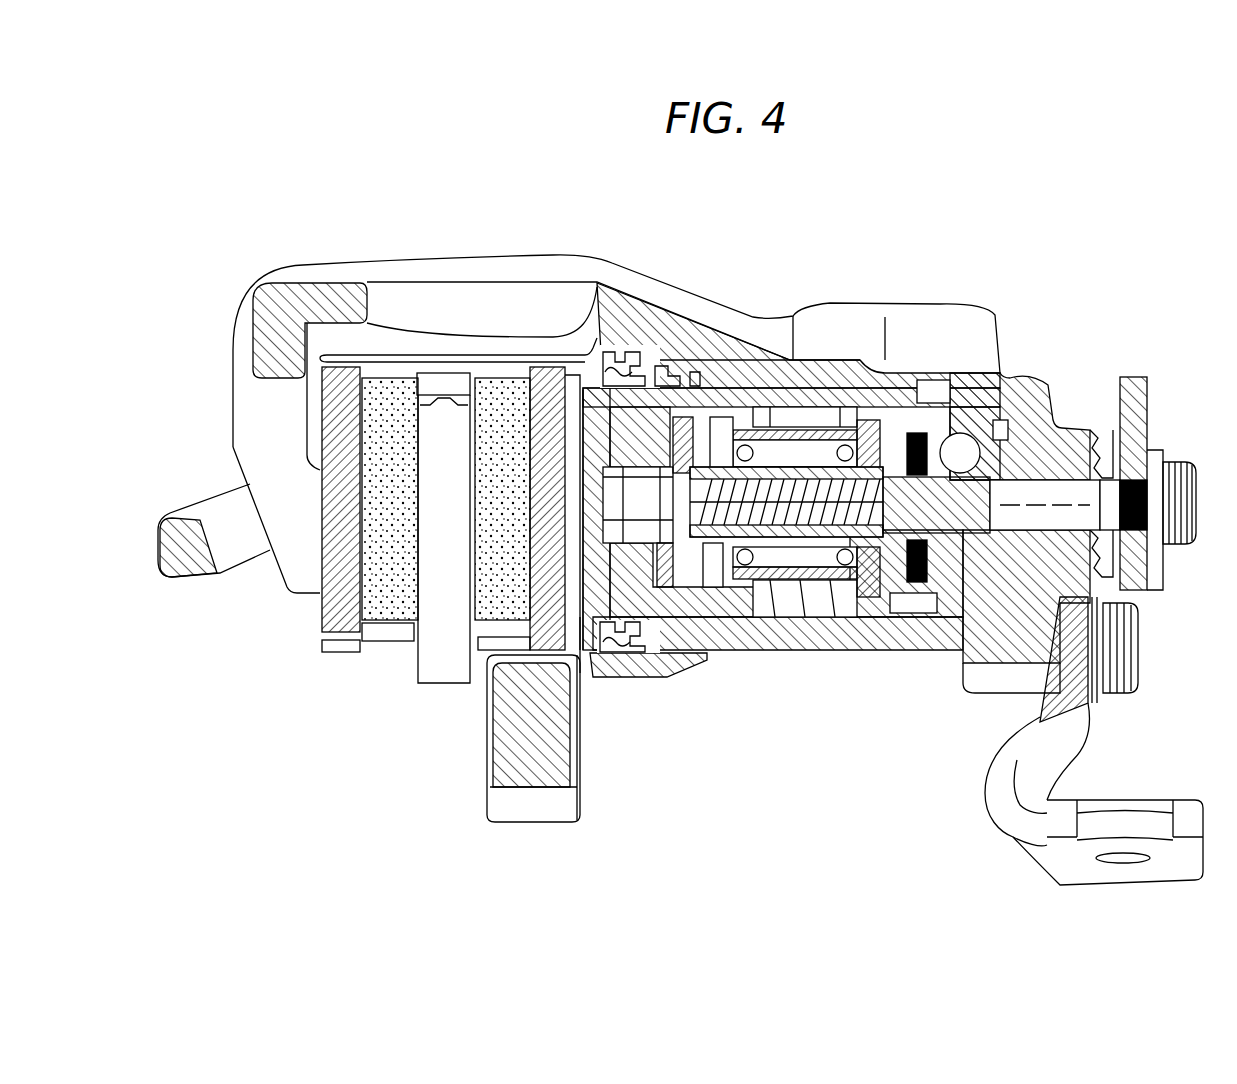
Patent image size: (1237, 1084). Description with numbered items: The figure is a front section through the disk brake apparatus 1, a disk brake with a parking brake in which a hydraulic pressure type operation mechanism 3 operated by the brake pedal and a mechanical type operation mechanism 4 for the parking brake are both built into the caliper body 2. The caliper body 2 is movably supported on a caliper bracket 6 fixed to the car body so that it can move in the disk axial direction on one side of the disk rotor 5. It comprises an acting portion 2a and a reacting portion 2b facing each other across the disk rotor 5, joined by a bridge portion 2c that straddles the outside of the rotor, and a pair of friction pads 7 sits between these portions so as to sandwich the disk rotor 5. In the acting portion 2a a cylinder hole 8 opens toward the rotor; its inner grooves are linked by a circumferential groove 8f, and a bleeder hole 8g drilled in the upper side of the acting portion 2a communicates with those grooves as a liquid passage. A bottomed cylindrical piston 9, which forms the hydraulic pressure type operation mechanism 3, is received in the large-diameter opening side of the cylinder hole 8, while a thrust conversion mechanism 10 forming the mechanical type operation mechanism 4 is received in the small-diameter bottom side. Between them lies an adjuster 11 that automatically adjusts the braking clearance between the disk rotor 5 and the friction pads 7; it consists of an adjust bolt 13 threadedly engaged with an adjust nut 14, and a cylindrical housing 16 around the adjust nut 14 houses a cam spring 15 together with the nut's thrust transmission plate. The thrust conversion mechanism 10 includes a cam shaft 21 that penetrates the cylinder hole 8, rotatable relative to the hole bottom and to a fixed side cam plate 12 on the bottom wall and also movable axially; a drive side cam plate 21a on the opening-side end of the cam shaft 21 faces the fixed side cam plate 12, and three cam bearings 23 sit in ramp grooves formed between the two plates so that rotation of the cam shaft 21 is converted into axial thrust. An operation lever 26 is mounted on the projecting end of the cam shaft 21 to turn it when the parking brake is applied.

The disk brake apparatus 1 is at (968, 263).
The caliper body 2 is at (518, 253).
The acting portion 2a is at (1022, 390).
The reacting portion 2b is at (245, 455).
The bridge portion 2c is at (460, 292).
The hydraulic pressure type operation mechanism 3 is at (700, 658).
The mechanical type operation mechanism 4 is at (1050, 399).
The disk rotor 5 is at (440, 683).
The caliper bracket 6 is at (565, 732).
The friction pad 7 is at (510, 369).
The cylinder hole 8 is at (741, 652).
The circumferential groove 8f is at (893, 652).
The bleeder hole 8g is at (928, 380).
The piston 9 is at (678, 656).
The thrust conversion mechanism 10 is at (955, 398).
The adjuster 11 is at (843, 680).
The fixed side cam plate 12 is at (1003, 428).
The adjust bolt 13 is at (782, 632).
The adjust nut 14 is at (822, 620).
The cam spring 15 is at (868, 632).
The cylindrical housing 16 is at (826, 418).
The cam shaft 21 is at (1163, 484).
The drive side cam plate 21a is at (945, 645).
The cam bearing 23 is at (988, 490).
The operation lever 26 is at (1140, 412).